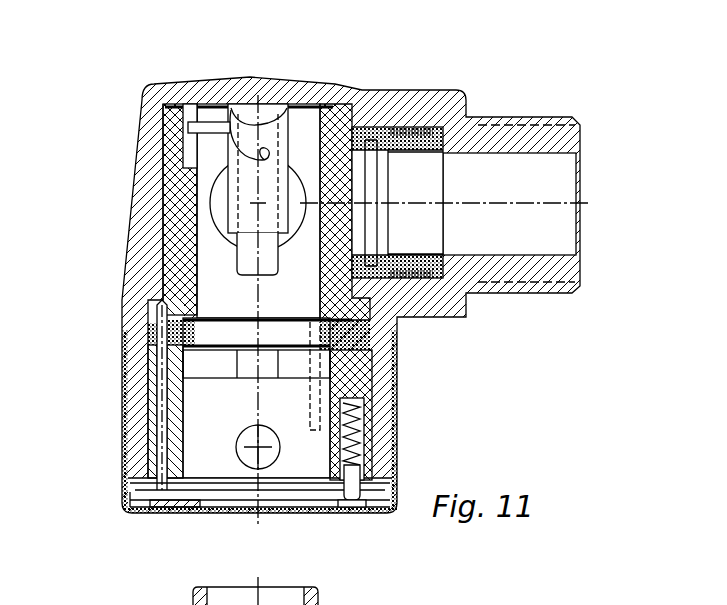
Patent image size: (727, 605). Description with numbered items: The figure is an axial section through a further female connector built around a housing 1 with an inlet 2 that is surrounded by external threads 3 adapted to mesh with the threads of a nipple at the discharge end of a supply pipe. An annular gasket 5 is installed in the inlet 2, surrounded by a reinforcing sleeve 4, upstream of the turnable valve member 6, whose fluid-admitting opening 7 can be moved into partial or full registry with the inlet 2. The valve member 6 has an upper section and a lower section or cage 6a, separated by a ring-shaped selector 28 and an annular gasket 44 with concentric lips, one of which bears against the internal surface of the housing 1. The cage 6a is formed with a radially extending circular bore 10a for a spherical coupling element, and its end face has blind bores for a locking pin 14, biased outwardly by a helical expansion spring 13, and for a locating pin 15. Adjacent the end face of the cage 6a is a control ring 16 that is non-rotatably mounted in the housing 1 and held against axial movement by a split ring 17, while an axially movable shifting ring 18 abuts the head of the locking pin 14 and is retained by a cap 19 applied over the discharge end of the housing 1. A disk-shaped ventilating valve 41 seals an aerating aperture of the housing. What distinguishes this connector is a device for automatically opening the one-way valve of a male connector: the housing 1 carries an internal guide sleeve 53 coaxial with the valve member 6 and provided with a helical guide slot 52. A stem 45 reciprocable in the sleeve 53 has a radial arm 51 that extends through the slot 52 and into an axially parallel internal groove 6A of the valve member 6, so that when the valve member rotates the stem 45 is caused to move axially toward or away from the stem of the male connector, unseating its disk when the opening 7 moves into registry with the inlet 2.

The housing 1 is at (147, 227).
The inlet 2 is at (508, 165).
The external threads 3 is at (487, 118).
The reinforcing sleeve 4 is at (435, 110).
The annular gasket 5 is at (400, 105).
The valve member 6 is at (150, 176).
The internal groove 6A is at (206, 100).
The lower section or cage 6a is at (128, 427).
The fluid-admitting opening 7 is at (302, 192).
The circular bore 10a is at (247, 455).
The helical expansion spring 13 is at (332, 470).
The locking pin 14 is at (343, 503).
The locating pin 15 is at (160, 402).
The control ring 16 is at (160, 481).
The split ring 17 is at (115, 504).
The shifting ring 18 is at (360, 507).
The cap 19 is at (138, 519).
The ring-shaped selector 28 is at (150, 363).
The ventilating valve 41 is at (305, 104).
The annular gasket 44 is at (165, 337).
The stem 45 is at (250, 253).
The radial arm 51 is at (231, 120).
The helical guide slot 52 is at (270, 157).
The internal guide sleeve 53 is at (243, 182).